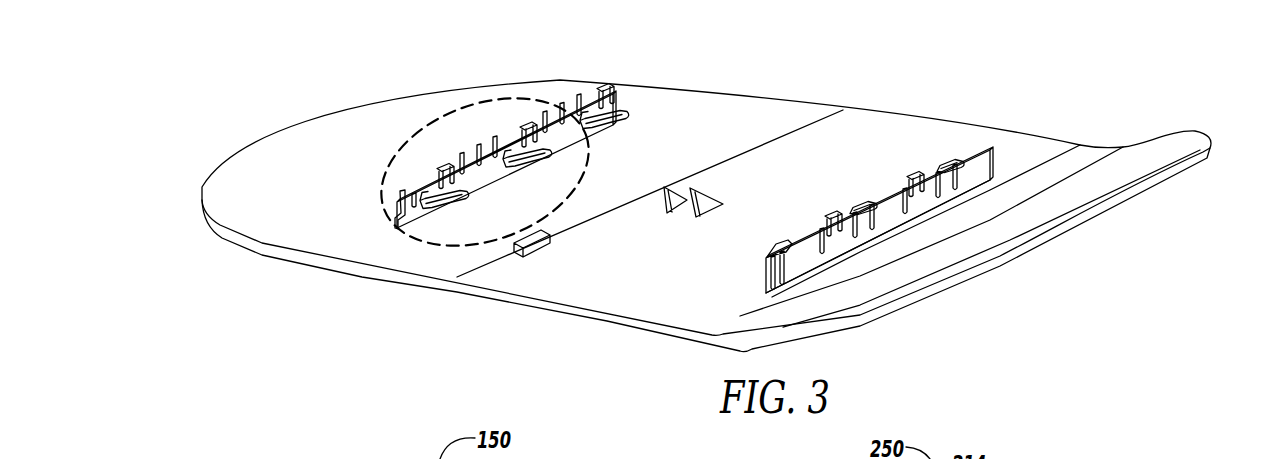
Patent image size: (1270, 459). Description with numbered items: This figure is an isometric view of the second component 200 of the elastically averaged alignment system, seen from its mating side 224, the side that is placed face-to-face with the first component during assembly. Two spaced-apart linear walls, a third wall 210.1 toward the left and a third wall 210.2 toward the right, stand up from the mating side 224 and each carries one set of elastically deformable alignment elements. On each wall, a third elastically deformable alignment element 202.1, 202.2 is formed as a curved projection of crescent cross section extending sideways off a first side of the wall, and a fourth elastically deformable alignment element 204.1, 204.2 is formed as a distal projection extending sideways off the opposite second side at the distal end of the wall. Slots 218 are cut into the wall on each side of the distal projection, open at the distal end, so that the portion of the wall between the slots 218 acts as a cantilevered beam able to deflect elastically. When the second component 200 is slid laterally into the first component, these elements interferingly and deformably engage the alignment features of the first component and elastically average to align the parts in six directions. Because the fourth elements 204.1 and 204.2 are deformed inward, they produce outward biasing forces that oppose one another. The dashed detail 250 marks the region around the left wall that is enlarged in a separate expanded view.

The second component 200 is at (1138, 110).
The third elastically deformable alignment element 202.1 is at (435, 204).
The third elastically deformable alignment element 202.2 is at (774, 252).
The fourth elastically deformable alignment element 204.1 is at (397, 202).
The fourth elastically deformable alignment element 204.2 is at (838, 237).
The third wall 210.1 is at (608, 92).
The third wall 210.2 is at (977, 147).
The slots 218 is at (924, 197).
The mating side 224 is at (760, 128).
The detail 250 is at (446, 118).